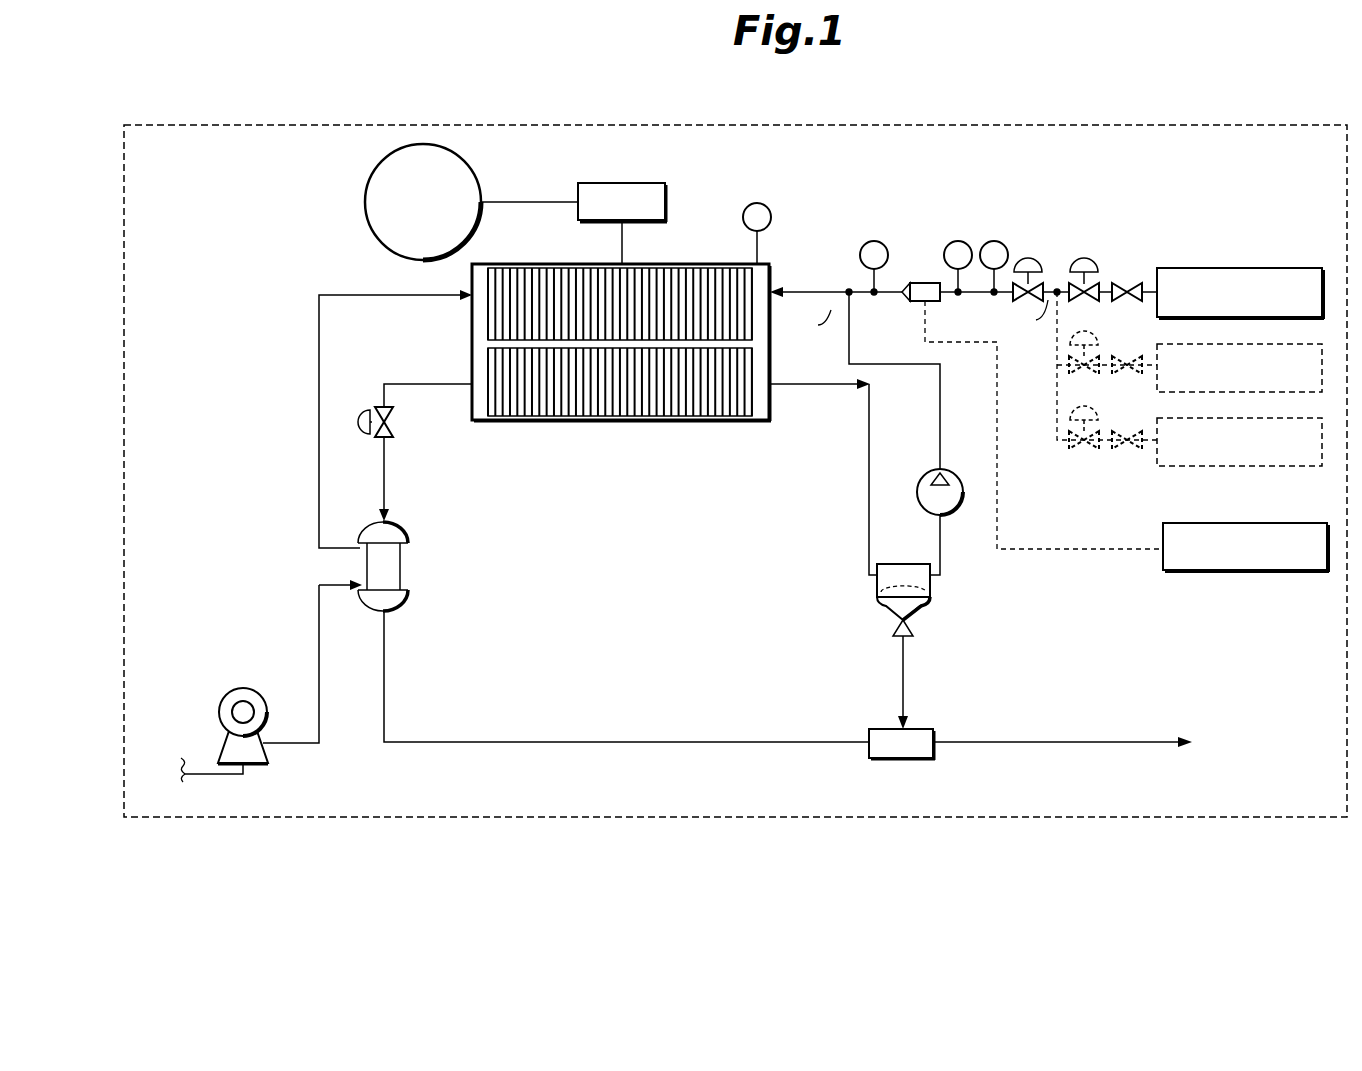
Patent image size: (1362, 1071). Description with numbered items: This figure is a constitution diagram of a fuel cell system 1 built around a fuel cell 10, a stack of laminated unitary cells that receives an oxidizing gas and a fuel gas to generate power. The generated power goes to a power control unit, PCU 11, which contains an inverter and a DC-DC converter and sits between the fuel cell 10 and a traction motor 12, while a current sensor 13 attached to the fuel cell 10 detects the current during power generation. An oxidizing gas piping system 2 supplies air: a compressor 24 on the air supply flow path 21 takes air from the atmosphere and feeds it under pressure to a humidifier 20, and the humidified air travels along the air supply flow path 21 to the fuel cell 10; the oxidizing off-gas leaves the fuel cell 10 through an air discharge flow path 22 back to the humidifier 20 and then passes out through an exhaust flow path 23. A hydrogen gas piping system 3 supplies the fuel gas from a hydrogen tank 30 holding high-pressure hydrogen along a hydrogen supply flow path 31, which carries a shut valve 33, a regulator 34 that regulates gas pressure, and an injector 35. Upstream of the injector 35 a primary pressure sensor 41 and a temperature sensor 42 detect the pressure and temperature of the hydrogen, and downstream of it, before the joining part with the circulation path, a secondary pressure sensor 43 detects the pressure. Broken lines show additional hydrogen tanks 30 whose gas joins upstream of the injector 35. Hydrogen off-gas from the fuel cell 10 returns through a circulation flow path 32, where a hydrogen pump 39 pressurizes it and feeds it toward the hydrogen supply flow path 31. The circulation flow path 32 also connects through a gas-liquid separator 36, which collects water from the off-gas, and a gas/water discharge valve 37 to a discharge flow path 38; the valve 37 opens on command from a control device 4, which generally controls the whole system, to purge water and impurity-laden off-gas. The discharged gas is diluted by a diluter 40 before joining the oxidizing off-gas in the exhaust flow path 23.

The fuel cell system 1 is at (614, 120).
The oxidizing gas piping system 2 is at (424, 519).
The hydrogen gas piping system 3 is at (848, 564).
The control device 4 is at (1240, 523).
The fuel cell 10 is at (717, 421).
The power control unit (PCU) 11 is at (666, 205).
The traction motor 12 is at (364, 212).
The current sensor 13 is at (763, 204).
The humidifier 20 is at (405, 576).
The air supply flow path 21 is at (318, 495).
The air discharge flow path 22 is at (389, 478).
The exhaust flow path 23 is at (805, 741).
The compressor 24 is at (247, 688).
The hydrogen tank 30 is at (1272, 268).
The hydrogen supply flow path 31 is at (805, 292).
The circulation flow path 32 is at (868, 530).
The shut valve 33 is at (1119, 283).
The regulator 34 is at (1028, 266).
The injector 35 is at (925, 283).
The gas-liquid separator 36 is at (887, 563).
The gas/water discharge valve 37 is at (893, 627).
The discharge flow path 38 is at (904, 690).
The hydrogen pump 39 is at (930, 472).
The diluter 40 is at (935, 738).
The primary pressure sensor 41 is at (960, 241).
The temperature sensor 42 is at (995, 241).
The secondary pressure sensor 43 is at (876, 241).